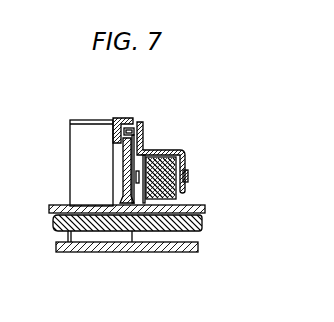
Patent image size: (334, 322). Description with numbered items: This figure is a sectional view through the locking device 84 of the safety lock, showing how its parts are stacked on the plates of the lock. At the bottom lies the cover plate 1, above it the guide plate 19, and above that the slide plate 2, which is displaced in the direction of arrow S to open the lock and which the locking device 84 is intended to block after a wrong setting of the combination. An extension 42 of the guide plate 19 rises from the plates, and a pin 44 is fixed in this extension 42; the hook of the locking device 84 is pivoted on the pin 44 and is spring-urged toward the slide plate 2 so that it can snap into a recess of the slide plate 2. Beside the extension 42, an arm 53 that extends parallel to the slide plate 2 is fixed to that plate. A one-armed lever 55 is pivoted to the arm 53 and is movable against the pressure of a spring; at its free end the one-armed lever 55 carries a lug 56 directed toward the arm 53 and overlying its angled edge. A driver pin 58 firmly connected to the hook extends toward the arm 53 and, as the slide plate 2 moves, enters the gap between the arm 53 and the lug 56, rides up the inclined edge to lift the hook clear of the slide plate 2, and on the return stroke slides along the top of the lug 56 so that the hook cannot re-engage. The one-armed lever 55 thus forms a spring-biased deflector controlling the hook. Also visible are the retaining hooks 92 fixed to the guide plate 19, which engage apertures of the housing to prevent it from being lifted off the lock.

The cover plate 1 is at (197, 250).
The slide plate 2 is at (205, 212).
The guide plate 19 is at (58, 225).
The extension of the guide plate 42 is at (158, 170).
The pin 44 is at (188, 175).
The arm 53 is at (122, 185).
The one-armed lever 55 is at (113, 148).
The lug 56 is at (125, 128).
The driver pin 58 is at (138, 124).
The locking device 84 is at (183, 122).
The retaining hooks 92 is at (80, 151).